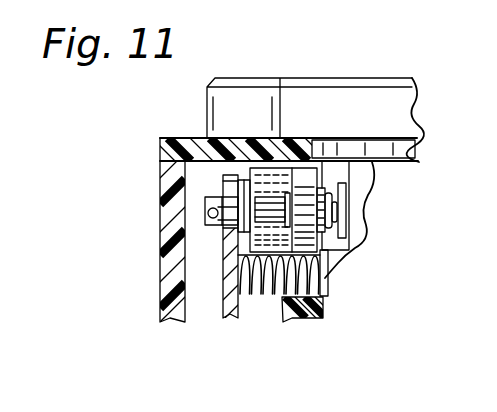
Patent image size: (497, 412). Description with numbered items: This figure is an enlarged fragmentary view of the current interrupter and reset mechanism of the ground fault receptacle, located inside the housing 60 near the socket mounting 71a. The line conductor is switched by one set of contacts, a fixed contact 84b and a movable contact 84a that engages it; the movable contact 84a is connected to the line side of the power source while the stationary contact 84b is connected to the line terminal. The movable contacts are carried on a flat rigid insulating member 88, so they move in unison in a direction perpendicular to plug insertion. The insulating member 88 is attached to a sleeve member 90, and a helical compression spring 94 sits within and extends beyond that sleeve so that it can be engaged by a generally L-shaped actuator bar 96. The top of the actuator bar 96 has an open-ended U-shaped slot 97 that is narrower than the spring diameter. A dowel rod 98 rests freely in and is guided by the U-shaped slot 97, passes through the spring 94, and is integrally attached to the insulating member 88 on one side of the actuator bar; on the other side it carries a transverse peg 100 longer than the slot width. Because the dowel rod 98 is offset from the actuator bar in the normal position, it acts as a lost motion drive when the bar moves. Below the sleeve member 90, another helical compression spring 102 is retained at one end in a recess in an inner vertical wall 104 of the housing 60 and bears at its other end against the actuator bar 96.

The housing 60 is at (160, 278).
The socket mounting 71a is at (397, 87).
The movable contact 84a is at (329, 233).
The fixed contact 84b is at (338, 219).
The insulating member 88 is at (308, 170).
The sleeve member 90 is at (276, 170).
The helical compression spring 94 is at (245, 170).
The actuator bar 96 is at (222, 292).
The U-shaped slot 97 is at (227, 178).
The dowel rod 98 is at (214, 203).
The peg 100 is at (208, 214).
The helical compression spring 102 is at (270, 290).
The inner vertical wall 104 is at (330, 270).